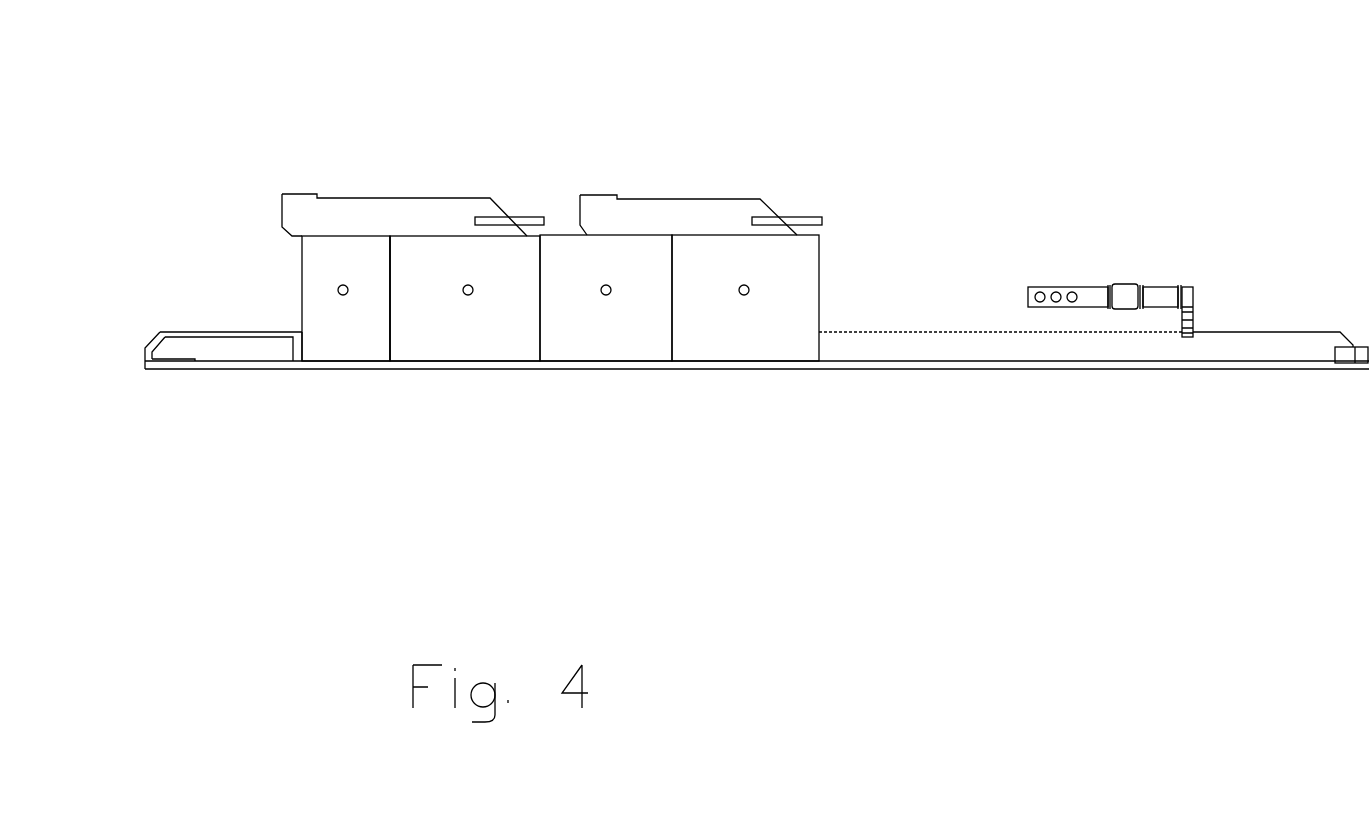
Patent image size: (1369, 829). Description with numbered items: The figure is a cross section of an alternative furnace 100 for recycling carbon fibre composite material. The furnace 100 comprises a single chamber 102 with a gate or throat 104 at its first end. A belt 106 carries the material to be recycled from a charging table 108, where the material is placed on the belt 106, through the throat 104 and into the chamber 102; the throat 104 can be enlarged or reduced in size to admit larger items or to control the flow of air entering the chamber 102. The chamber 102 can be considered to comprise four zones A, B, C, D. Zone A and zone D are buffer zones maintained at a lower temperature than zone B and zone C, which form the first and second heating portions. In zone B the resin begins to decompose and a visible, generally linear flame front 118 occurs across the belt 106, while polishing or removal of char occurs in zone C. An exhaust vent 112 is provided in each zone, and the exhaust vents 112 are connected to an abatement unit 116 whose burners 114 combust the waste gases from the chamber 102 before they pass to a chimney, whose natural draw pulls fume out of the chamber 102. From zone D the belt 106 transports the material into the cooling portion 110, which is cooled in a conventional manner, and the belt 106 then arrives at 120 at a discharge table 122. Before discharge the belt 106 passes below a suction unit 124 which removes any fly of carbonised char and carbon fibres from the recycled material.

The furnace 100 is at (837, 83).
The chamber 102 is at (370, 334).
The throat 104 is at (298, 350).
The belt 106 is at (195, 363).
The charging table 108 is at (212, 330).
The cooling portion 110 is at (941, 349).
The exhaust vents 112 is at (467, 283).
The burners 114 is at (520, 217).
The abatement unit 116 is at (442, 197).
The flame front 118 is at (390, 358).
The belt arrival point 120 is at (1257, 370).
The discharge table 122 is at (1280, 332).
The suction unit 124 is at (1156, 287).
The zone A is at (350, 335).
The zone B is at (468, 333).
The zone C is at (612, 333).
The zone D is at (755, 333).